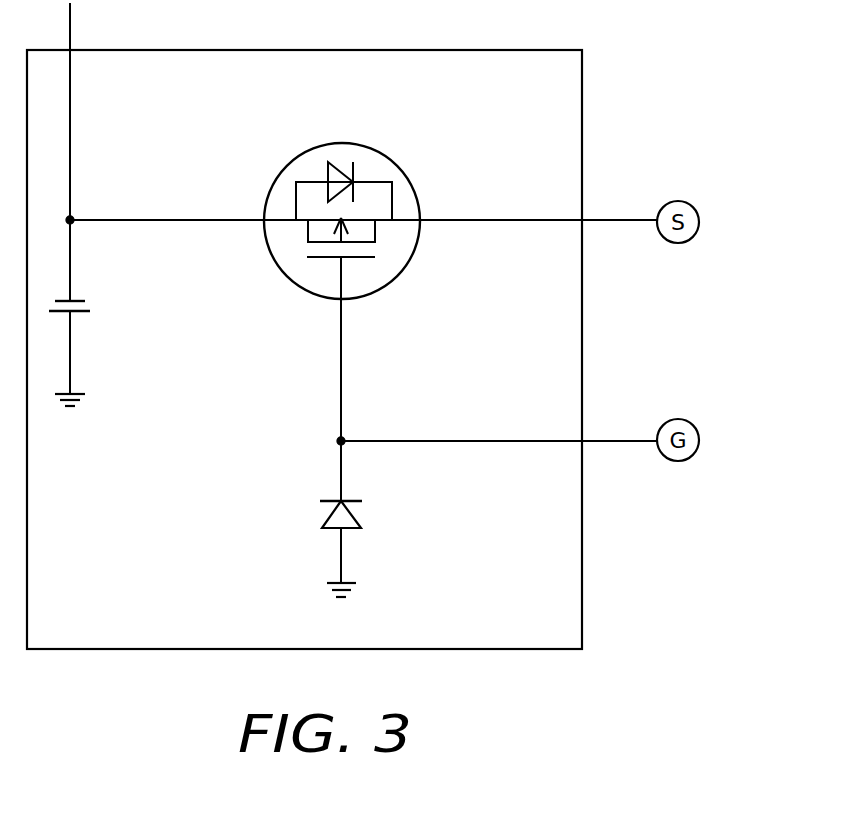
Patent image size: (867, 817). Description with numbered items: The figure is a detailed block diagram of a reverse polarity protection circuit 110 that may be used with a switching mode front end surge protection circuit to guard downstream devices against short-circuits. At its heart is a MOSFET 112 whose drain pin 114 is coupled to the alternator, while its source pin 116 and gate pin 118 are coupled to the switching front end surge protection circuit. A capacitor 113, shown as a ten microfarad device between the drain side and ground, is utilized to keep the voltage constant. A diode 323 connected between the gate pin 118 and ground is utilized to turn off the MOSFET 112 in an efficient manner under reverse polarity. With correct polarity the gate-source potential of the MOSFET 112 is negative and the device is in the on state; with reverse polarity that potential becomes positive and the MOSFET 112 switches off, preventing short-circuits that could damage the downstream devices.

The reverse polarity protection circuit 110 is at (586, 91).
The MOSFET 112 is at (340, 143).
The capacitor 113 is at (85, 312).
The drain pin 114 is at (243, 188).
The source pin 116 is at (437, 198).
The gate pin 118 is at (362, 326).
The diode 323 is at (352, 528).